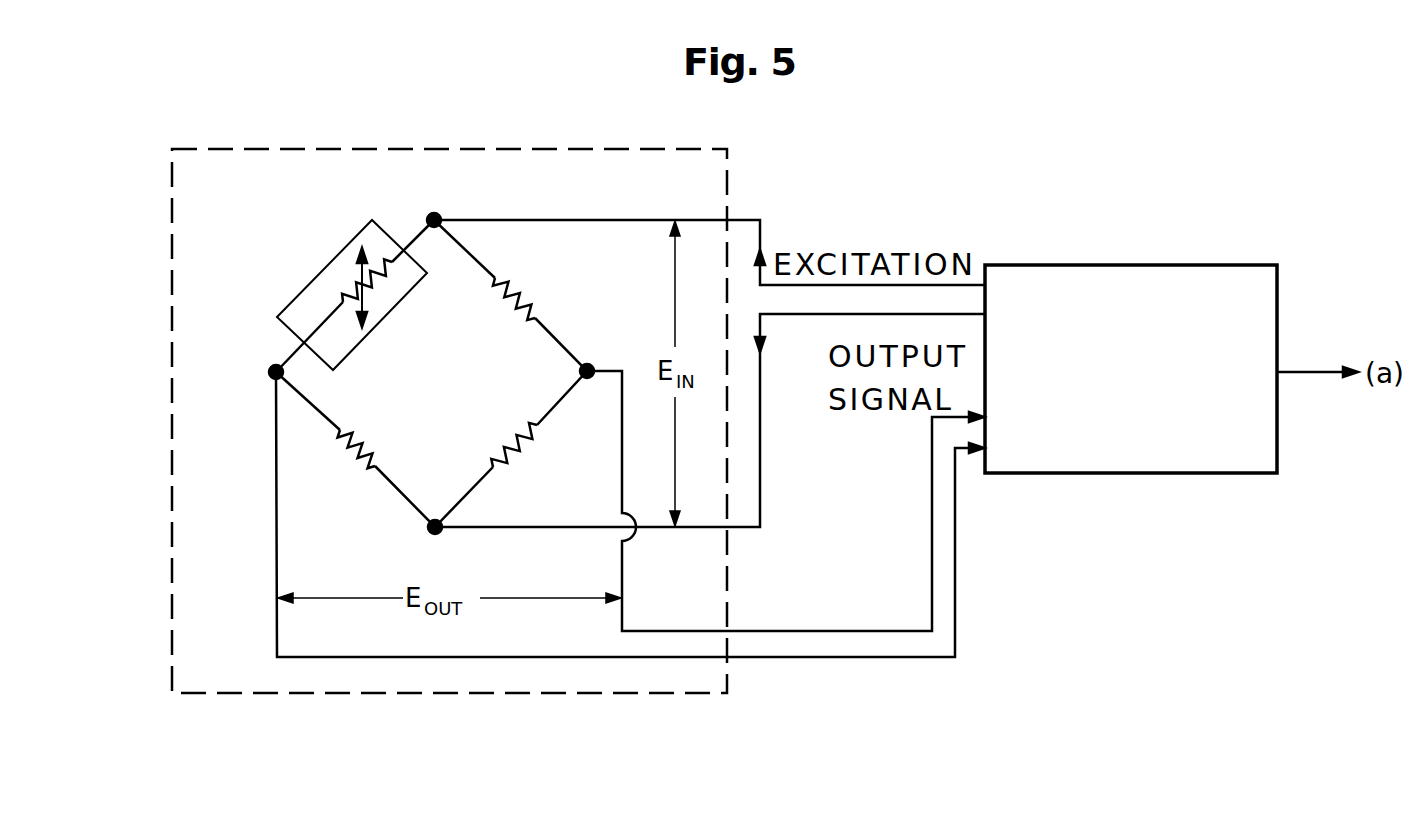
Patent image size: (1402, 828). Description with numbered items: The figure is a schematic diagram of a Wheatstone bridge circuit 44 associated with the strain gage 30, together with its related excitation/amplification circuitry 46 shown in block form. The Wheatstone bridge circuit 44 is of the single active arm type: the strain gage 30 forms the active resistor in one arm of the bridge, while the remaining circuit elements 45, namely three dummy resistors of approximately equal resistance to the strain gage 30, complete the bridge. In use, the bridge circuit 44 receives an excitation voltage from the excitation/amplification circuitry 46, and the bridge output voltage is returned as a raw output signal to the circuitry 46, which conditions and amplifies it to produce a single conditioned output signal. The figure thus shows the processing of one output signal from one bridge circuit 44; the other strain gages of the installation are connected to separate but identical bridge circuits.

The strain gage 30 is at (310, 280).
The Wheatstone bridge circuit 44 is at (172, 447).
The remaining circuit elements 45 is at (507, 297).
The excitation/amplification circuitry 46 is at (1142, 265).